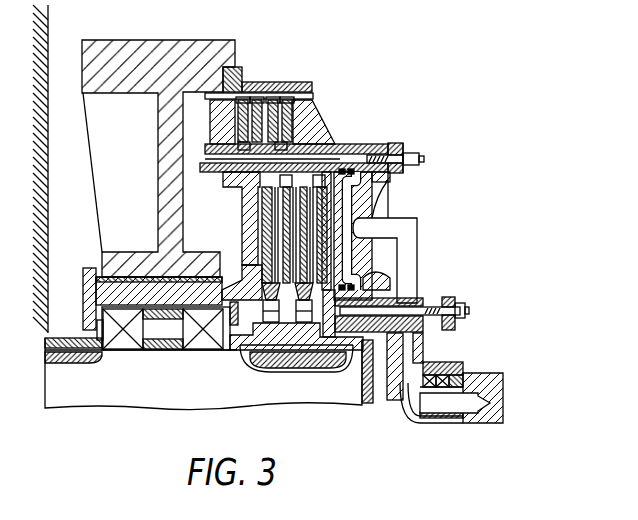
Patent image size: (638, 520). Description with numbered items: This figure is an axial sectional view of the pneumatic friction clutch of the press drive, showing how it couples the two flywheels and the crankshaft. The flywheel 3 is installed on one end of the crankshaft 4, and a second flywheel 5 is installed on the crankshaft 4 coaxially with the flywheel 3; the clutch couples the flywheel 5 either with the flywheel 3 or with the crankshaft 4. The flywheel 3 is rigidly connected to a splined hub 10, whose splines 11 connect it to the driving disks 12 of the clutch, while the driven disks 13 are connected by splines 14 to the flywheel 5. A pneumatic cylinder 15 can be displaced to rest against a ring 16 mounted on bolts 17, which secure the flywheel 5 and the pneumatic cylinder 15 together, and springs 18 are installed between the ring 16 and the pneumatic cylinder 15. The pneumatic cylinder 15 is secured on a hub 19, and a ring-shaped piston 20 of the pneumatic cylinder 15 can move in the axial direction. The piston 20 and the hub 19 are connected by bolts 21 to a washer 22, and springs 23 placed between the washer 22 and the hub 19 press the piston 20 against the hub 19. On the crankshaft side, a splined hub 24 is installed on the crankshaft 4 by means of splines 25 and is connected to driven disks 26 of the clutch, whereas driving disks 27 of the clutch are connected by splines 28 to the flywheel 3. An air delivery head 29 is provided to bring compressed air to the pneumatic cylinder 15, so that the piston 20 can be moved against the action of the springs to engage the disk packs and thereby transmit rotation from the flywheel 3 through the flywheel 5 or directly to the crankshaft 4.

The flywheel 3 is at (85, 74).
The crankshaft 4 is at (97, 390).
The flywheel 5 is at (85, 291).
The splined hub 10 is at (235, 67).
The splines 11 is at (215, 96).
The driving disks 12 is at (255, 86).
The driven disks 13 is at (287, 97).
The splines 14 is at (333, 128).
The pneumatic cylinder 15 is at (367, 140).
The ring 16 is at (403, 145).
The bolts 17 is at (421, 160).
The springs 18 is at (392, 152).
The hub 19 is at (433, 362).
The ring-shaped piston 20 is at (342, 212).
The bolts 21 is at (466, 312).
The washer 22 is at (452, 298).
The springs 23 is at (430, 305).
The splined hub 24 is at (305, 346).
The splines 25 is at (236, 352).
The driven disks 26 is at (237, 330).
The driving disks 27 is at (242, 246).
The splines 28 is at (242, 185).
The air delivery head 29 is at (503, 392).